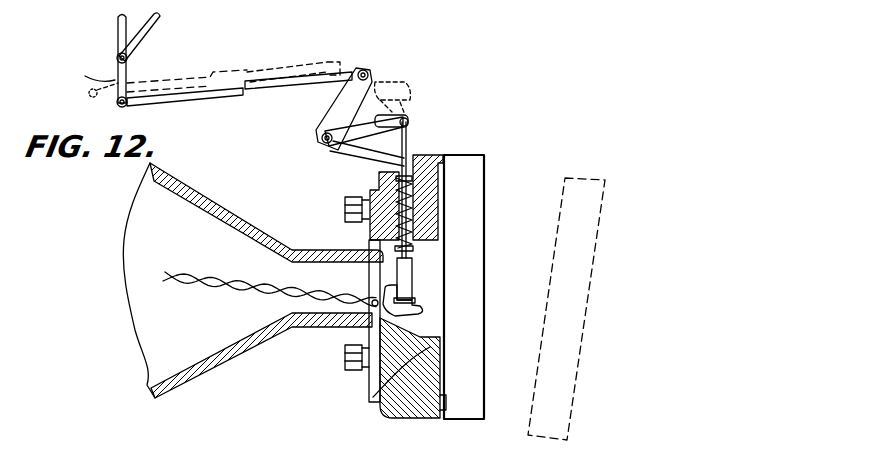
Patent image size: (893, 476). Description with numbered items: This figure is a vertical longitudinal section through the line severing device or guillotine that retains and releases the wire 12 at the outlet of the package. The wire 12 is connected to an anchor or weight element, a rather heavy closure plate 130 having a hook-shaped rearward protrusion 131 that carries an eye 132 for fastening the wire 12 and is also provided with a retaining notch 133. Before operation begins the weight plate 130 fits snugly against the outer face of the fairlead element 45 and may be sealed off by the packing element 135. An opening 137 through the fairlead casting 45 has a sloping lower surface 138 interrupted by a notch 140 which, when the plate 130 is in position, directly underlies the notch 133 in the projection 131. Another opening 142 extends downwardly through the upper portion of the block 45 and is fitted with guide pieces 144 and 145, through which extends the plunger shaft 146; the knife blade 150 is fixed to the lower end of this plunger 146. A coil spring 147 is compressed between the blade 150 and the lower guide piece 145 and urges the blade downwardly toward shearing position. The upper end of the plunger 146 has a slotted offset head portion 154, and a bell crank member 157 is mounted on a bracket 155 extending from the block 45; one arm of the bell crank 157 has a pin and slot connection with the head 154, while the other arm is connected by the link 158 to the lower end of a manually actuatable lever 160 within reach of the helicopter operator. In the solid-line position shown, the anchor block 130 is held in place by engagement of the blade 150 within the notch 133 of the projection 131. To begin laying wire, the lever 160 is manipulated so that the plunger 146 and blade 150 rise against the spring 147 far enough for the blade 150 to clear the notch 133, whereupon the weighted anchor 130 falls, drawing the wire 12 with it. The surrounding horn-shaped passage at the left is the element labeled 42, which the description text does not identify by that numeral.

The wire 12 is at (326, 306).
The horn 42 is at (253, 296).
The fairlead element 45 is at (348, 423).
The closure plate 130 is at (587, 279).
The hook-shaped rearward protrusion 131 is at (514, 293).
The eye 132 is at (388, 345).
The retaining notch 133 is at (462, 301).
The packing element 135 is at (458, 170).
The opening 137 is at (459, 287).
The sloping lower surface 138 is at (486, 401).
The notch 140 is at (372, 368).
The opening 142 is at (455, 196).
The guide piece 144 is at (425, 190).
The lower guide piece 145 is at (352, 206).
The plunger shaft 146 is at (341, 140).
The coil spring 147 is at (345, 299).
The knife blade 150 is at (444, 275).
The slotted offset head portion 154 is at (402, 81).
The bracket 155 is at (303, 174).
The bell crank member 157 is at (308, 109).
The link 158 is at (233, 72).
The manually actuatable lever 160 is at (108, 60).